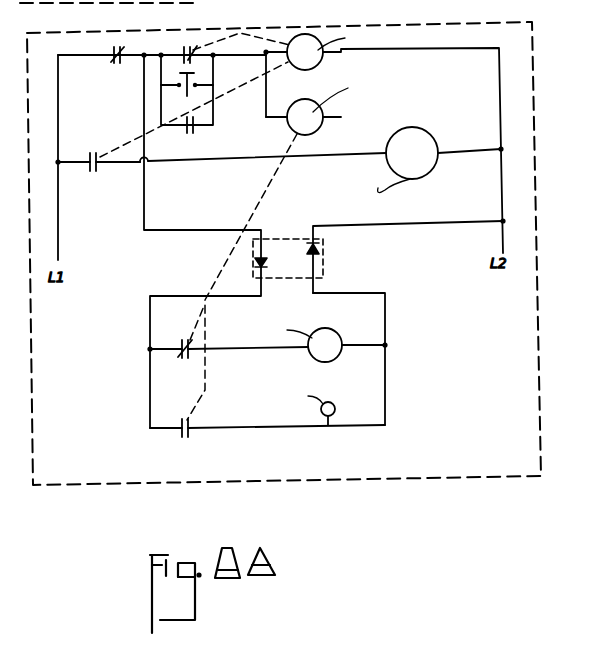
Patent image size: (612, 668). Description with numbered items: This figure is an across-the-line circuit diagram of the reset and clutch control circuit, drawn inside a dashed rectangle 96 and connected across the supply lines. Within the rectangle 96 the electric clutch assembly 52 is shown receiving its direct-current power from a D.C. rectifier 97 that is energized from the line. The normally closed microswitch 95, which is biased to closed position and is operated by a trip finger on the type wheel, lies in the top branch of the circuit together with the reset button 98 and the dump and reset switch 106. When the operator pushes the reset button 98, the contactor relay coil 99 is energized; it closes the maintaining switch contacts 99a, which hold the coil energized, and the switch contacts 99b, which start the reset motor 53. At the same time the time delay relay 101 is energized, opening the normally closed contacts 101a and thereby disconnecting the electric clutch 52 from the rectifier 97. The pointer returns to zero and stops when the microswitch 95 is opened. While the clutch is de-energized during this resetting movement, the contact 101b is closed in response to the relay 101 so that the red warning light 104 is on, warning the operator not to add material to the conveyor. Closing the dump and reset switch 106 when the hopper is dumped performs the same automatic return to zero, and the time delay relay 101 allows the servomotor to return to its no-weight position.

The microswitch 95 is at (112, 50).
The maintaining switch contacts 99a is at (180, 50).
The contactor relay coil 99 is at (314, 37).
The reset button 98 is at (187, 90).
The dump and reset switch 106 is at (196, 130).
The switch contacts 99b is at (86, 152).
The time delay relay 101 is at (320, 126).
The reset motor 53 is at (432, 135).
The D.C. rectifier 97 is at (321, 248).
The electric clutch assembly 52 is at (333, 330).
The normally closed contacts 101a is at (183, 357).
The red warning light 104 is at (335, 411).
The contact 101b is at (192, 434).
The rectangle 96 is at (537, 265).